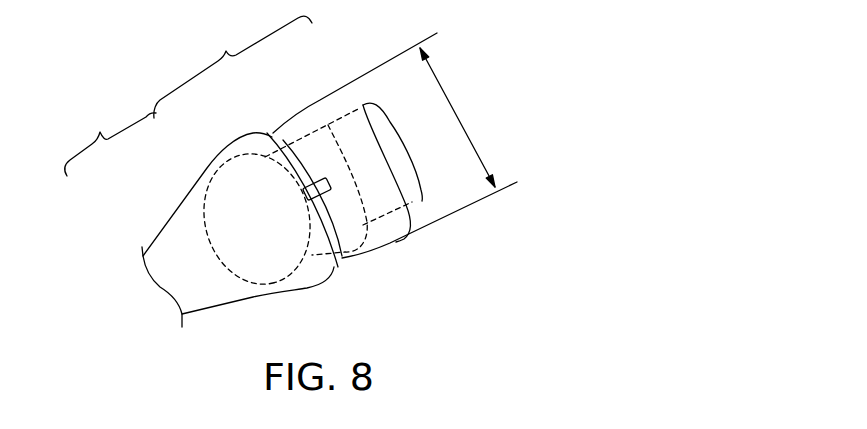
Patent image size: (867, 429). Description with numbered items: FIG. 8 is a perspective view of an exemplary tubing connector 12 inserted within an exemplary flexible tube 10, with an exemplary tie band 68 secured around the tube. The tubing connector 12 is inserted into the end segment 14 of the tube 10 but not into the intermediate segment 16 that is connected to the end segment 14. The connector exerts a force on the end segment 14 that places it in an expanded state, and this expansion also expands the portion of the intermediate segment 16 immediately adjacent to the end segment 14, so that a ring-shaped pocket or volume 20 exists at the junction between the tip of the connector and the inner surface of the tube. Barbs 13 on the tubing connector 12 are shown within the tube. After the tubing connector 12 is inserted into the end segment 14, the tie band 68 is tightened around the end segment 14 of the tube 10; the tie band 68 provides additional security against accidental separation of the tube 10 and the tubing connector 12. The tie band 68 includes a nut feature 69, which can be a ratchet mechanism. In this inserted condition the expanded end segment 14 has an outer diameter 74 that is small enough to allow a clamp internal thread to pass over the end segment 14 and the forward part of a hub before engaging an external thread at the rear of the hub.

The tube 10 is at (197, 187).
The tubing connector 12 is at (218, 178).
The barbs 13 is at (305, 265).
The end segment 14 is at (225, 53).
The intermediate segment 16 is at (98, 132).
The ring-shaped pocket or volume 20 is at (189, 209).
The tie band 68 is at (271, 134).
The nut feature 69 is at (313, 175).
The outer diameter 74 is at (461, 117).